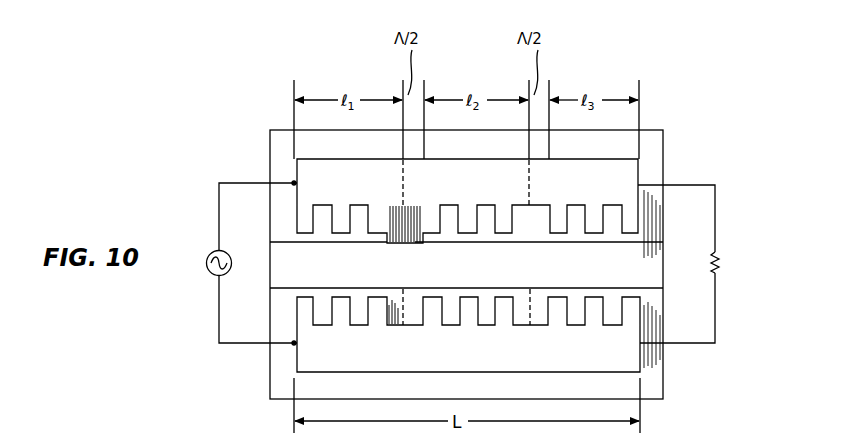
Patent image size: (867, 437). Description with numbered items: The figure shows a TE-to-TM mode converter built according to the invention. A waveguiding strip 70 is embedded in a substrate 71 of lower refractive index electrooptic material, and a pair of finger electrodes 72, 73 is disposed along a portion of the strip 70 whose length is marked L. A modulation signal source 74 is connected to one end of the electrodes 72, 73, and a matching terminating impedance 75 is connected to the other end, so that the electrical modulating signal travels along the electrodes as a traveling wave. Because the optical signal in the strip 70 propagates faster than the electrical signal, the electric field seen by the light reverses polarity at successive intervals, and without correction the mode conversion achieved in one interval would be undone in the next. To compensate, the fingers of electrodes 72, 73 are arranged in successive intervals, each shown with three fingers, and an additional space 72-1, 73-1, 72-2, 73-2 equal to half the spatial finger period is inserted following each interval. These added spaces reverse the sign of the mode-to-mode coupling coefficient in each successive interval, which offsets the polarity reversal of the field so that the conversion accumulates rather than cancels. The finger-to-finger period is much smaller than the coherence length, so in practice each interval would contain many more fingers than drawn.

The waveguiding strip 70 is at (282, 255).
The substrate 71 is at (286, 146).
The electrode 72 is at (431, 189).
The additional space 72-1 is at (412, 205).
The additional space 72-2 is at (540, 205).
The electrode 73 is at (436, 336).
The additional space 73-1 is at (412, 320).
The additional space 73-2 is at (542, 322).
The modulation signal source 74 is at (241, 263).
The matching terminating impedance 75 is at (693, 264).